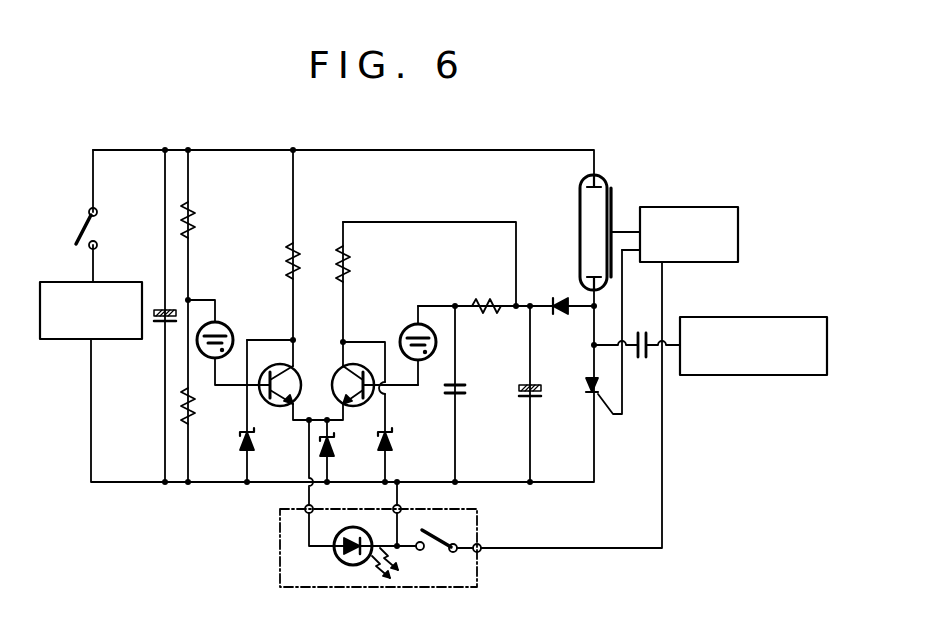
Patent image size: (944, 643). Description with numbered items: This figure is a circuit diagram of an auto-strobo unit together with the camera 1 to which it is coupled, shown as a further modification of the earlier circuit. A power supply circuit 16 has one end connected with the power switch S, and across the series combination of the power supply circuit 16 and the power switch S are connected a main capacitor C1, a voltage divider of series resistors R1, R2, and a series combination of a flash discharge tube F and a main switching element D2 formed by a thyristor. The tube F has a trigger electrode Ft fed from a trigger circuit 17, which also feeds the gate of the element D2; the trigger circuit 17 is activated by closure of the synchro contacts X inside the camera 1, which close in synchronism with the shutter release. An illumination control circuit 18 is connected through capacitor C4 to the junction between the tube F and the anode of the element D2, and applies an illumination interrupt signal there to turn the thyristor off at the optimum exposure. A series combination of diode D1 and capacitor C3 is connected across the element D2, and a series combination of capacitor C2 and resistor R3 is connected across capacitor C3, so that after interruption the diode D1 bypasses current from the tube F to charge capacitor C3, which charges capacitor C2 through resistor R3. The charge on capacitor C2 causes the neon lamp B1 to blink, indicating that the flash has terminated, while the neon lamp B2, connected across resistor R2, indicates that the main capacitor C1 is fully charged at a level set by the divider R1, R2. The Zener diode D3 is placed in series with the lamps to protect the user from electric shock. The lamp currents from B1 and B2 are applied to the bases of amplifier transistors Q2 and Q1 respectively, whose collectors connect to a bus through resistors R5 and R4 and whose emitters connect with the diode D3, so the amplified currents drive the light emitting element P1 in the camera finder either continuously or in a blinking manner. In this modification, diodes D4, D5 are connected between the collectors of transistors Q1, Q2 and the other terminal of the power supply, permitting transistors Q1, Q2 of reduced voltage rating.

The power switch S is at (82, 237).
The power supply circuit 16 is at (72, 340).
The main capacitor C1 is at (160, 321).
The resistor R1 is at (195, 222).
The resistor R2 is at (195, 408).
The neon lamp B2 is at (226, 325).
The amplifier transistor Q1 is at (289, 372).
The amplifier transistor Q2 is at (338, 396).
The Zener diode D3 is at (332, 452).
The diode D4 is at (252, 445).
The diode D5 is at (391, 446).
The resistor R3 is at (484, 314).
The resistor R4 is at (300, 248).
The resistor R5 is at (350, 275).
The neon lamp B1 is at (408, 331).
The capacitor C2 is at (444, 390).
The capacitor C3 is at (518, 394).
The diode D1 is at (557, 310).
The main switching element D2 is at (586, 392).
The flash discharge tube F is at (578, 236).
The trigger electrode Ft is at (612, 205).
The trigger circuit 17 is at (698, 207).
The illumination control circuit 18 is at (726, 317).
The capacitor C4 is at (644, 357).
The camera 1 is at (370, 588).
The light emitting element P1 is at (340, 563).
The synchro contacts X is at (434, 541).